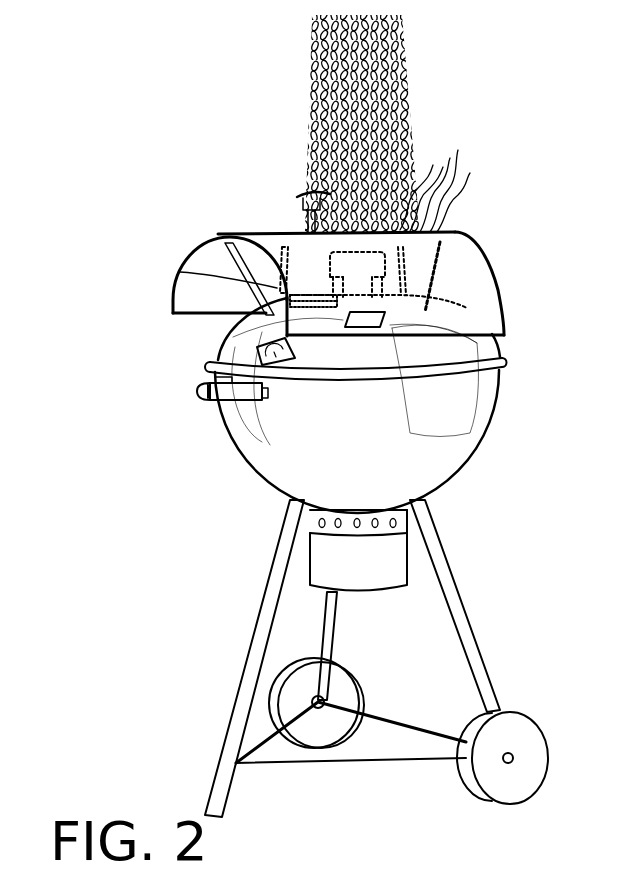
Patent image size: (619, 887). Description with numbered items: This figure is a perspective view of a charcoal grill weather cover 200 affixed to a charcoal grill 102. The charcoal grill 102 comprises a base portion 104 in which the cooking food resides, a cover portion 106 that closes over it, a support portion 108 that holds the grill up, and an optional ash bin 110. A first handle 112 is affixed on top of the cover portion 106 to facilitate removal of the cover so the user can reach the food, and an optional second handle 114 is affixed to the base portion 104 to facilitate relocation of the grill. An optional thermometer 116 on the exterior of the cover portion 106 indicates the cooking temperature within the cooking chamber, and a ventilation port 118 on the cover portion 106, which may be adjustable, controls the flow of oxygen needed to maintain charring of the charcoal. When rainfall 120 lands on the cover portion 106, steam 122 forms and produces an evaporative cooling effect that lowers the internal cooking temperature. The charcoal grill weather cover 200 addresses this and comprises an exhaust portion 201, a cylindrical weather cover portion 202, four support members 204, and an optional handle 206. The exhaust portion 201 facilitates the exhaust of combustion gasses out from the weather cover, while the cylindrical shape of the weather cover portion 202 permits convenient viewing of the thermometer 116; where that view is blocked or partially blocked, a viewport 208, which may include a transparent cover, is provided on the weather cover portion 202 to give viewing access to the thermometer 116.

The charcoal grill 102 is at (157, 315).
The base portion 104 is at (282, 468).
The cover portion 106 is at (245, 348).
The support portion 108 is at (240, 605).
The ash bin 110 is at (353, 567).
The first handle 112 is at (323, 260).
The second handle 114 is at (207, 392).
The thermometer 116 is at (300, 348).
The ventilation port 118 is at (320, 314).
The rainfall 120 is at (428, 97).
The steam 122 is at (458, 152).
The charcoal grill weather cover 200 is at (517, 262).
The exhaust portion 201 is at (470, 228).
The weather cover portion 202 is at (503, 313).
The support members 204 is at (277, 285).
The handle 206 is at (297, 197).
The viewport 208 is at (372, 325).